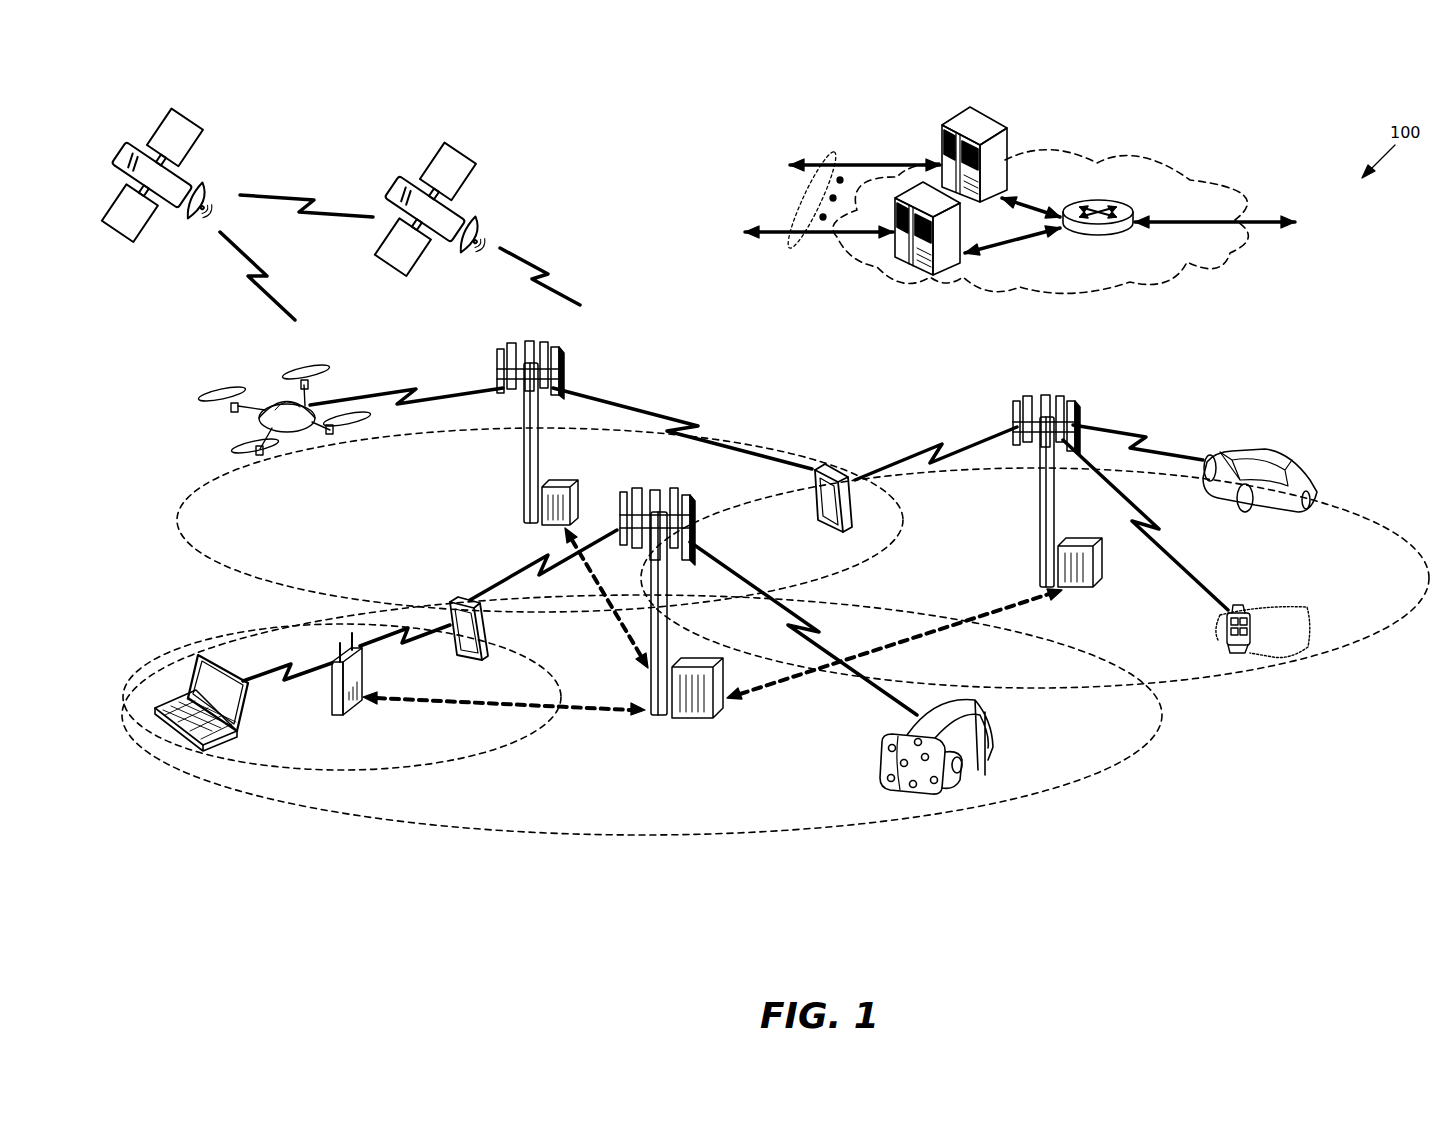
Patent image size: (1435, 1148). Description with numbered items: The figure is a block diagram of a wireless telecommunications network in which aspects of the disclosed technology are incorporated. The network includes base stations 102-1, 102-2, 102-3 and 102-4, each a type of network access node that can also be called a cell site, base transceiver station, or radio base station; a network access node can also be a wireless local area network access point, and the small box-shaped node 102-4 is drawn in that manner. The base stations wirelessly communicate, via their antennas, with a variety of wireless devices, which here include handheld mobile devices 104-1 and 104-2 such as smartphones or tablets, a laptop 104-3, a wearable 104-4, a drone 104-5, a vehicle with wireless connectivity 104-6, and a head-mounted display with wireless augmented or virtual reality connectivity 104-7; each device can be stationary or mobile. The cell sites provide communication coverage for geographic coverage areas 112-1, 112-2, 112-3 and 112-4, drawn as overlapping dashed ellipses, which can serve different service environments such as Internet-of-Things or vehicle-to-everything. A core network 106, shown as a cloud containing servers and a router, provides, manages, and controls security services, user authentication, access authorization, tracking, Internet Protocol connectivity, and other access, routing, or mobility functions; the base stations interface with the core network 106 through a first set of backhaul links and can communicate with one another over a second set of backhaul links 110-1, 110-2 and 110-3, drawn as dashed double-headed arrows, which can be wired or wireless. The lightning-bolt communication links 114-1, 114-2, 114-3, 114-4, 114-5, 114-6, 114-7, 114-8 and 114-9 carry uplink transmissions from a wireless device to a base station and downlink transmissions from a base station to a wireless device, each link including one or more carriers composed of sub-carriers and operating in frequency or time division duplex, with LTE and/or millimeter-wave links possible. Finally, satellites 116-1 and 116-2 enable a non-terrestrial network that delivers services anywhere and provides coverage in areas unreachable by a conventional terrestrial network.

The base station 102-1 is at (657, 716).
The base station 102-2 is at (522, 470).
The base station 102-3 is at (1040, 505).
The base station 102-4 is at (332, 705).
The handheld mobile device 104-1 is at (482, 643).
The handheld mobile device 104-2 is at (815, 505).
The laptop 104-3 is at (182, 738).
The wearable 104-4 is at (1233, 608).
The drone 104-5 is at (292, 437).
The vehicle with wireless connectivity 104-6 is at (1317, 437).
The head-mounted display with wireless AR/VR connectivity 104-7 is at (993, 731).
The core network 106 is at (1130, 284).
The backhaul link 110-1 is at (400, 702).
The backhaul link 110-2 is at (960, 627).
The backhaul link 110-3 is at (616, 635).
The geographic coverage area 112-1 is at (585, 840).
The geographic coverage area 112-2 is at (467, 757).
The geographic coverage area 112-3 is at (213, 586).
The geographic coverage area 112-4 is at (1322, 507).
The communication link 114-1 is at (820, 628).
The communication link 114-2 is at (548, 565).
The communication link 114-3 is at (262, 681).
The communication link 114-4 is at (400, 643).
The communication link 114-5 is at (405, 390).
The communication link 114-6 is at (730, 400).
The communication link 114-7 is at (935, 447).
The communication link 114-8 is at (1168, 547).
The communication link 114-9 is at (1133, 433).
The satellite 116-1 is at (203, 182).
The satellite 116-2 is at (475, 222).